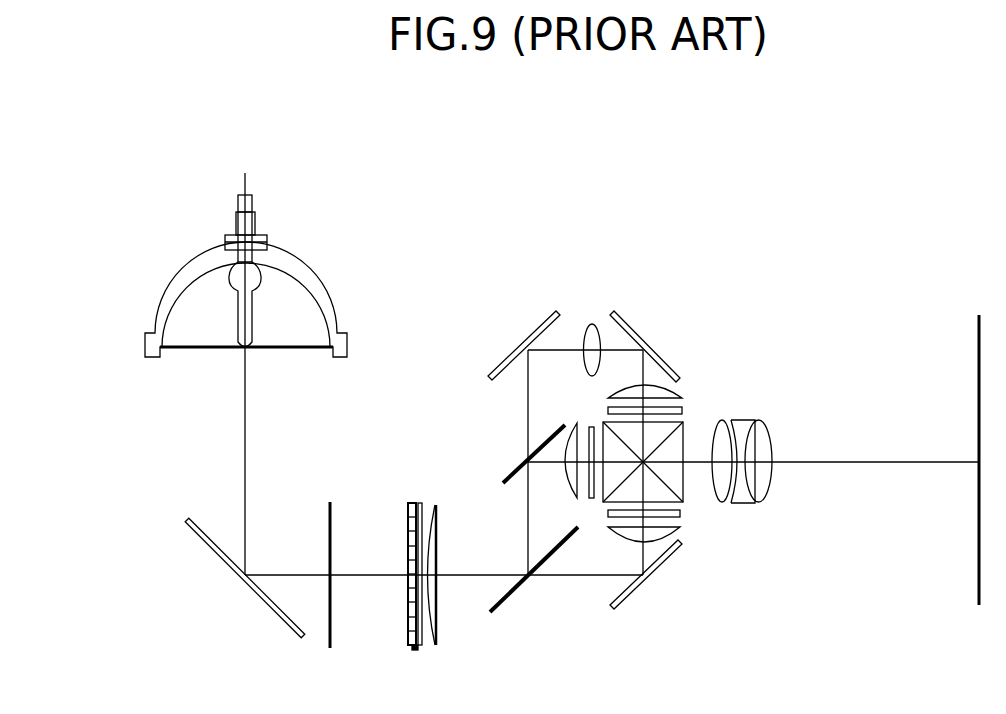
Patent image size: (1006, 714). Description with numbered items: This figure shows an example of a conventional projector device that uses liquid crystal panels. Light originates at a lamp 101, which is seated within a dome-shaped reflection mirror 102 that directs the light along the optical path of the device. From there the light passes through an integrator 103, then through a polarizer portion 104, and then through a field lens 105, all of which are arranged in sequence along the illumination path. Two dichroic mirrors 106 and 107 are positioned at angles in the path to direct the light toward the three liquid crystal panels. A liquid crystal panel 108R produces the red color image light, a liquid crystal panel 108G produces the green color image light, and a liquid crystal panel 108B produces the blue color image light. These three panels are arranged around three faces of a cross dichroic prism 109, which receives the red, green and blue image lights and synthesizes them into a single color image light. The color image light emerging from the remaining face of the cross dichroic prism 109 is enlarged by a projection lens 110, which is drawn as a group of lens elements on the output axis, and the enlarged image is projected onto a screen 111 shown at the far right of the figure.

The lamp 101 is at (252, 315).
The reflection mirror 102 is at (312, 273).
The integrator 103 is at (328, 508).
The polarizer portion 104 is at (417, 650).
The field lens 105 is at (437, 503).
The dichroic mirror 106 is at (503, 602).
The dichroic mirror 107 is at (505, 483).
The liquid crystal panel 108G is at (592, 428).
The liquid crystal panel 108B is at (687, 410).
The liquid crystal panel 108R is at (680, 515).
The cross dichroic prism 109 is at (685, 423).
The projection lens 110 is at (773, 435).
The screen 111 is at (977, 350).